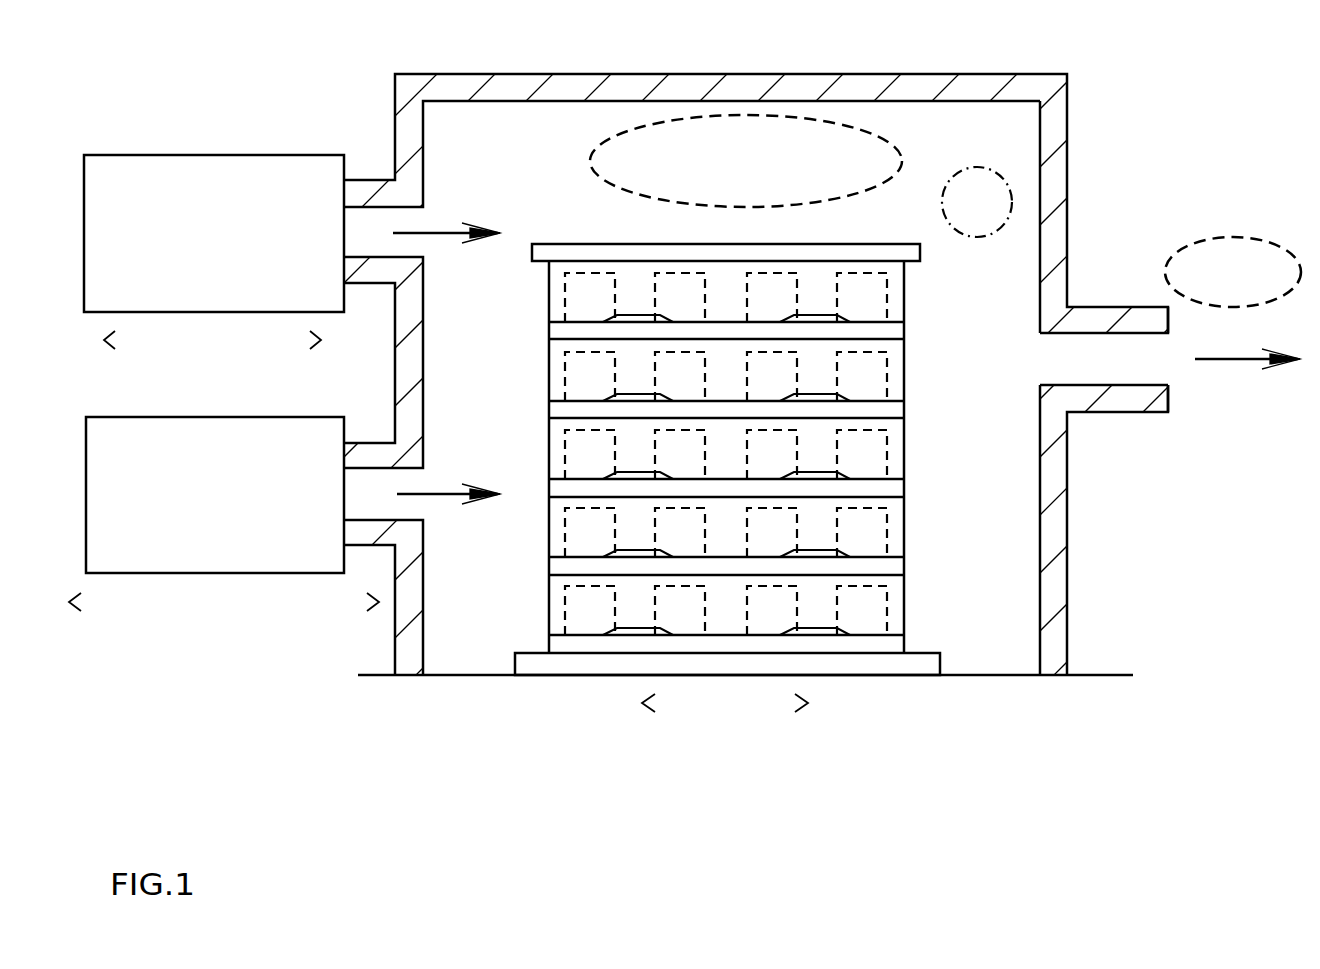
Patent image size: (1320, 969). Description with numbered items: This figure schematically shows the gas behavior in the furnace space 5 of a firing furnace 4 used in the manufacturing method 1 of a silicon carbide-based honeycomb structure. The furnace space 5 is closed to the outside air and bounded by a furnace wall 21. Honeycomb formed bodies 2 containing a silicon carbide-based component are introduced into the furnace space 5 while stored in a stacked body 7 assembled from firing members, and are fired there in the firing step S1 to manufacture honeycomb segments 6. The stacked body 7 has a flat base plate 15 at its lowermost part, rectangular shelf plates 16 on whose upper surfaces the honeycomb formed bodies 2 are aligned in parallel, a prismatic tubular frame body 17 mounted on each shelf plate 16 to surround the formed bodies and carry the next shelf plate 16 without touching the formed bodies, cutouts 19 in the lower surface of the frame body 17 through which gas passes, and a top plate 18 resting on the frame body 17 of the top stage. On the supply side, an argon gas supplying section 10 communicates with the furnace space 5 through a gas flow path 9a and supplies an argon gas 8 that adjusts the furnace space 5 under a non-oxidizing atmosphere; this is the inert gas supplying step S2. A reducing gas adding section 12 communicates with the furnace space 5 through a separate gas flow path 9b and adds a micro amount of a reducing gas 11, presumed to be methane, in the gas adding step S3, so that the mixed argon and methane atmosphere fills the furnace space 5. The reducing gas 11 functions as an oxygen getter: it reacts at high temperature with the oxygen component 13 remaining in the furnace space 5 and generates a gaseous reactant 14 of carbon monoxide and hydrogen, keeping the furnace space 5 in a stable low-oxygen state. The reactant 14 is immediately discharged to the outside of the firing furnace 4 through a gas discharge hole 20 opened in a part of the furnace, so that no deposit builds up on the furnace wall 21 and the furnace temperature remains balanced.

The manufacturing method 1 is at (270, 82).
The honeycomb formed body 2 is at (890, 295).
The firing furnace 4 is at (508, 86).
The furnace space 5 is at (505, 185).
The honeycomb segment 6 is at (771, 454).
The stacked body 7 is at (512, 345).
The argon gas 8 is at (447, 490).
The gas flow path 9a is at (368, 455).
The gas flow path 9b is at (368, 197).
The argon gas supplying section 10 is at (211, 415).
The reducing gas 11 is at (445, 232).
The reducing gas adding section 12 is at (210, 152).
The oxygen component 13 is at (962, 168).
The reactant 14 is at (1252, 237).
The base plate 15 is at (535, 663).
The shelf plate 16 is at (565, 332).
The frame body 17 is at (893, 276).
The top plate 18 is at (626, 250).
The cutout 19 is at (827, 632).
The gas discharge hole 20 is at (1098, 320).
The furnace wall 21 is at (1038, 142).
The firing step S1 is at (808, 705).
The inert gas supplying step S2 is at (362, 612).
The gas adding step S3 is at (302, 350).